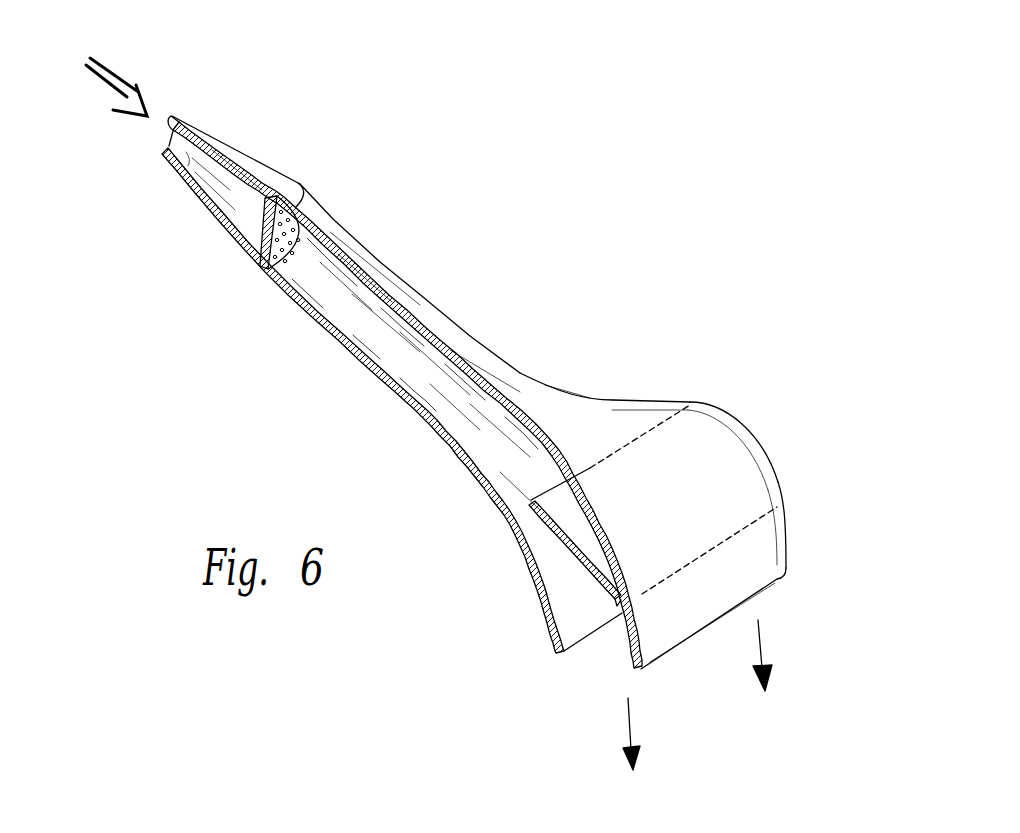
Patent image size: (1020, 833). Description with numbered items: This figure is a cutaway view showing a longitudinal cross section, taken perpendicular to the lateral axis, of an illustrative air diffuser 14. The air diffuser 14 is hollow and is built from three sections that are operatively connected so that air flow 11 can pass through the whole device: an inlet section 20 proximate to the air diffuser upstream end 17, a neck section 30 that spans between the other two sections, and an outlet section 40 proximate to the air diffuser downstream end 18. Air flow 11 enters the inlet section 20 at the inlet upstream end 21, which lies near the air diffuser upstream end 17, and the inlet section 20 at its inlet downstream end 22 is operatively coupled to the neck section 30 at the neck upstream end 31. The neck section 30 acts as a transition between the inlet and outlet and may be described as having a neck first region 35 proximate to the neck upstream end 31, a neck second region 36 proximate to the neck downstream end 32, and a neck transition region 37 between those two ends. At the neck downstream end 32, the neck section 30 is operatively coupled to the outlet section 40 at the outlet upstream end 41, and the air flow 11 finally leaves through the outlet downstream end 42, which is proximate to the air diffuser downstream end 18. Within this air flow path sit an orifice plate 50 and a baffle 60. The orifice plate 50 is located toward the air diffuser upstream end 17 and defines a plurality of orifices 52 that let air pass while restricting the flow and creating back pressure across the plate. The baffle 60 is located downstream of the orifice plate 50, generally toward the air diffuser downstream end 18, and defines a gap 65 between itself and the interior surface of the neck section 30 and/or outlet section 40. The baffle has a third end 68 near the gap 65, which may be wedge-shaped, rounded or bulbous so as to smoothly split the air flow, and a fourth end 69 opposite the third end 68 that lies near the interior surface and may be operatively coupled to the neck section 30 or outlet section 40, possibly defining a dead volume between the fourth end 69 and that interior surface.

The air flow 11 is at (106, 94).
The air diffuser 14 is at (703, 228).
The air diffuser upstream end 17 is at (190, 116).
The air diffuser downstream end 18 is at (790, 568).
The inlet section 20 is at (243, 150).
The inlet upstream end 21 is at (200, 116).
The inlet downstream end 22 is at (297, 181).
The neck section 30 is at (430, 293).
The neck upstream end 31 is at (340, 218).
The neck downstream end 32 is at (667, 401).
The neck first region 35 is at (398, 271).
The neck second region 36 is at (618, 400).
The neck transition region 37 is at (540, 386).
The outlet section 40 is at (787, 513).
The outlet upstream end 41 is at (780, 483).
The outlet downstream end 42 is at (790, 558).
The orifice plate 50 is at (262, 222).
The orifices 52 is at (277, 273).
The baffle 60 is at (598, 568).
The gap 65 is at (495, 492).
The third end 68 is at (522, 513).
The fourth end 69 is at (612, 600).